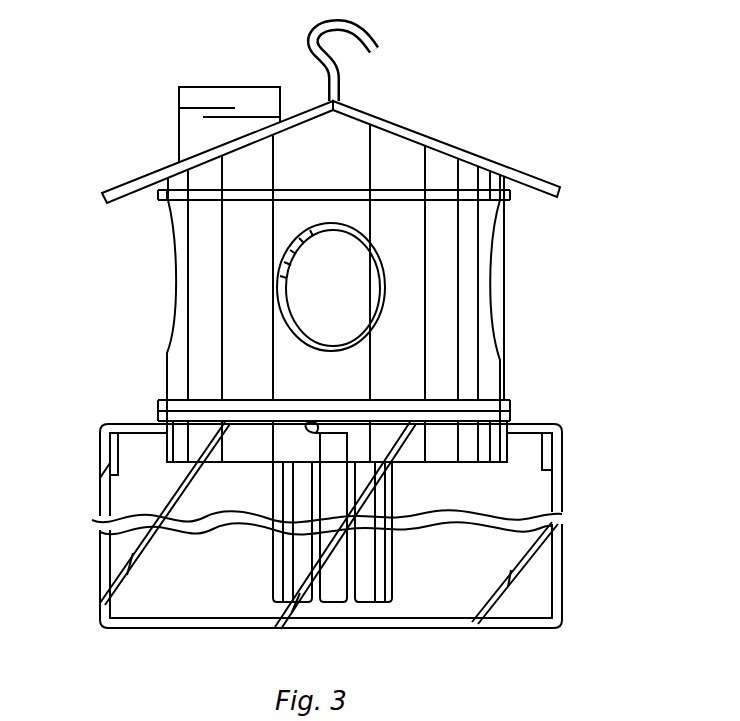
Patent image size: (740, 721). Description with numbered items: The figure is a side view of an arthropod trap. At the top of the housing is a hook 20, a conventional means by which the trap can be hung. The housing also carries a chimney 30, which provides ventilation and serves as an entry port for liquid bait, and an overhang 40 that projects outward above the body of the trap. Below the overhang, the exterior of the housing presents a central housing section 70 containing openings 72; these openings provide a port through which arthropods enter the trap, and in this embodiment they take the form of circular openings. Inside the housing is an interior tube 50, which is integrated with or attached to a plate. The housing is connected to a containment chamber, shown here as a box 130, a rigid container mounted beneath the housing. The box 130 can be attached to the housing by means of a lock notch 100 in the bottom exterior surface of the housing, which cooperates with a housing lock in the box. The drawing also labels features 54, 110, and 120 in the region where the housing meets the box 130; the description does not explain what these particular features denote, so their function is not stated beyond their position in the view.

The hook 20 is at (377, 50).
The chimney 30 is at (178, 100).
The overhang 40 is at (547, 181).
The interior tube 50 is at (395, 491).
The support posts 54 is at (280, 627).
The central housing section 70 is at (483, 373).
The openings 72 is at (386, 297).
The lock notch 100 is at (177, 413).
The lower flange 110 is at (503, 402).
The upper flange 120 is at (160, 203).
The box 130 is at (562, 588).